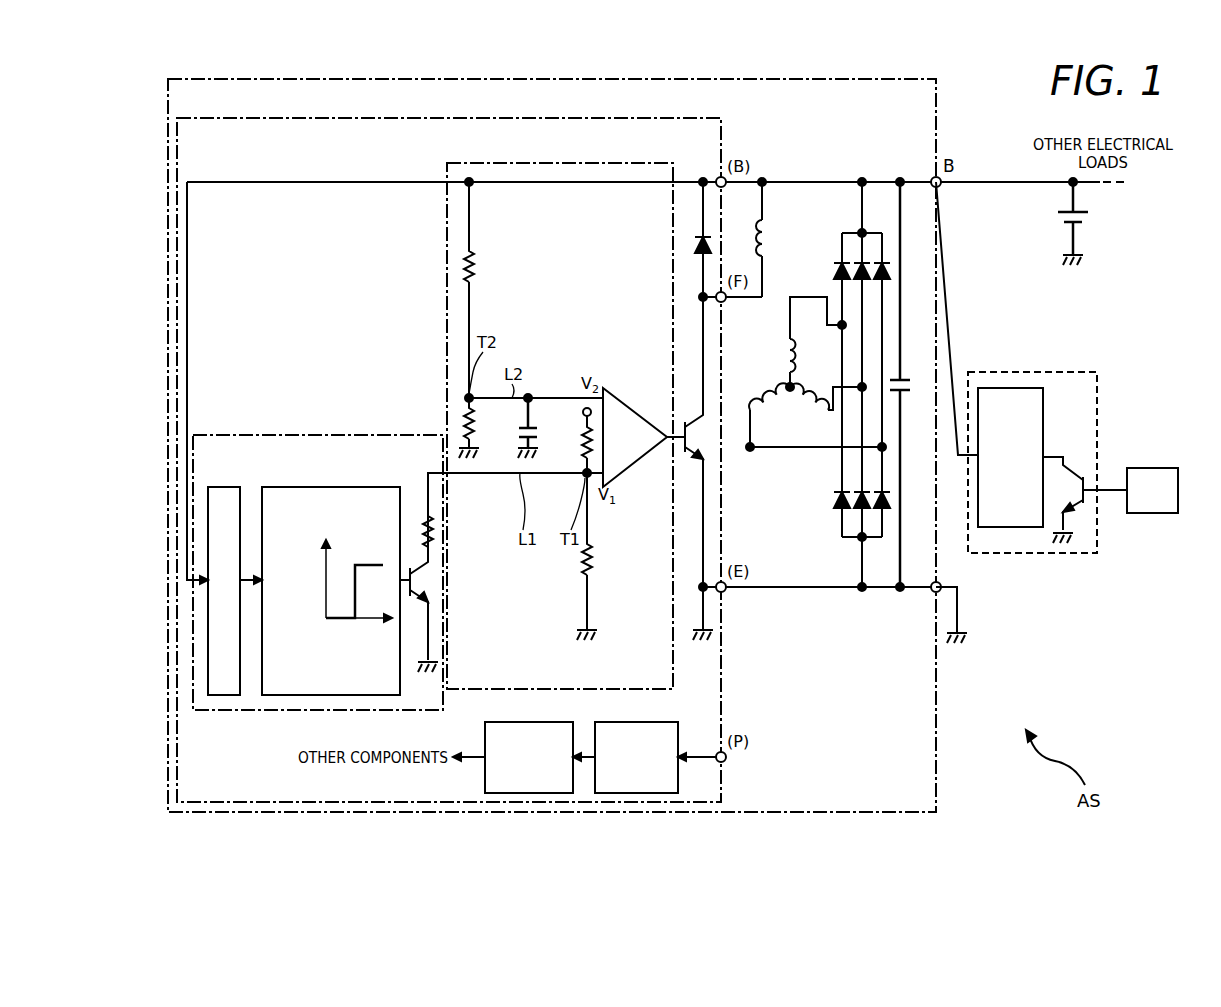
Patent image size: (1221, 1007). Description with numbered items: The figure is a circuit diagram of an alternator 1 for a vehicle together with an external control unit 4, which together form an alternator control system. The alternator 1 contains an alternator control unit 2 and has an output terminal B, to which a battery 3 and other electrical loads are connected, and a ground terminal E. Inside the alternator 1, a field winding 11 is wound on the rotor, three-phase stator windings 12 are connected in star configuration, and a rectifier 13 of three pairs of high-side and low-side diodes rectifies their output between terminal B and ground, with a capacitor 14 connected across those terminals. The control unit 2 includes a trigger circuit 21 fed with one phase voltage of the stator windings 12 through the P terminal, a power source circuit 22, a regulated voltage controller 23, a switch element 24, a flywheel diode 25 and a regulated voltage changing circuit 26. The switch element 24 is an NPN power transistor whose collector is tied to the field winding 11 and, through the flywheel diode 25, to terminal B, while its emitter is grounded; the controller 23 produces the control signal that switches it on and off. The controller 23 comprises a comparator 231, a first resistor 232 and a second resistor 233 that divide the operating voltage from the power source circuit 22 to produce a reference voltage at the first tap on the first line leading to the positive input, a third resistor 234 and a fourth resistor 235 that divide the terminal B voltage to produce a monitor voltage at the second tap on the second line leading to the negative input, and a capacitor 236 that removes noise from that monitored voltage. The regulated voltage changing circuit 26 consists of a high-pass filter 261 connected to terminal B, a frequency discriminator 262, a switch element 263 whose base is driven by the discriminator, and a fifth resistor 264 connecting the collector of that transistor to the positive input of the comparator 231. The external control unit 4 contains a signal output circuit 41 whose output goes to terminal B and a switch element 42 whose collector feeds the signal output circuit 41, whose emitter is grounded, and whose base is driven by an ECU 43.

The alternator 1 is at (936, 93).
The alternator control unit 2 is at (721, 128).
The battery 3 is at (1090, 220).
The external control unit 4 is at (1003, 372).
The field winding 11 is at (770, 240).
The three-phase stator windings 12 is at (787, 383).
The rectifier 13 is at (848, 233).
The capacitor 14 is at (904, 378).
The trigger circuit 21 is at (665, 722).
The power source circuit 22 is at (568, 722).
The regulated voltage controller 23 is at (673, 163).
The switch element 24 is at (690, 420).
The flywheel diode 25 is at (700, 240).
The regulated voltage changing circuit 26 is at (418, 435).
The signal output circuit 41 is at (1025, 527).
The switch element 42 is at (1075, 466).
The ECU 43 is at (1158, 468).
The comparator 231 is at (634, 412).
The first resistor 232 is at (580, 440).
The second resistor 233 is at (594, 560).
The third resistor 234 is at (476, 264).
The fourth resistor 235 is at (476, 425).
The capacitor 236 is at (522, 440).
The high-pass filter 261 is at (228, 487).
The frequency discriminator 262 is at (338, 487).
The switch element 263 is at (433, 612).
The fifth resistor 264 is at (425, 516).